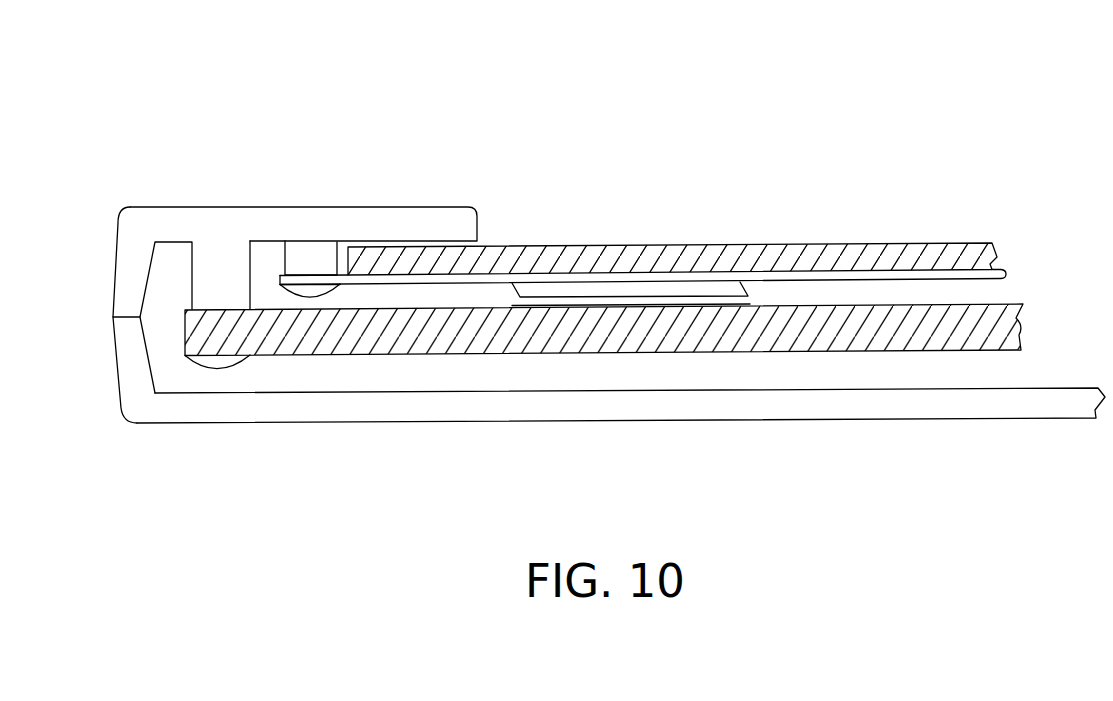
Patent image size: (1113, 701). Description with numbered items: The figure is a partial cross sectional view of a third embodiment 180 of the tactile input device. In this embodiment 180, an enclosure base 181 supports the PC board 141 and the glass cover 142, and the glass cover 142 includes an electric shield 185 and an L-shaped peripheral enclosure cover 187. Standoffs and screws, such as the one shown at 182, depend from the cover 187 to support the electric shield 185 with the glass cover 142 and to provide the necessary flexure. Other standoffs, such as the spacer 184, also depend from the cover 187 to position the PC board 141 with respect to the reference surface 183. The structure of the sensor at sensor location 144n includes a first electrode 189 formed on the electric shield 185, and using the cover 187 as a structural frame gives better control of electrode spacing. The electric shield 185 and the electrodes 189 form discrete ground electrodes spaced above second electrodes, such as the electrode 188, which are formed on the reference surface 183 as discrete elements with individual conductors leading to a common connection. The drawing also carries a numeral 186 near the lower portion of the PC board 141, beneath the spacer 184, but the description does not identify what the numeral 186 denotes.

The third embodiment of the tactile input device 180 is at (763, 124).
The sensor location 144n is at (375, 471).
The L-shaped peripheral enclosure cover 187 is at (428, 217).
The spacer 184 is at (217, 273).
The enclosure base 181 is at (682, 402).
The standoffs and screws 182 is at (305, 257).
The electric shield 185 is at (1006, 276).
The glass cover 142 is at (833, 252).
The first electrode 189 is at (604, 287).
The second electrode 188 is at (567, 305).
The PC board 141 is at (818, 340).
The fastener head 186 is at (222, 363).
The reference surface 183 is at (893, 306).